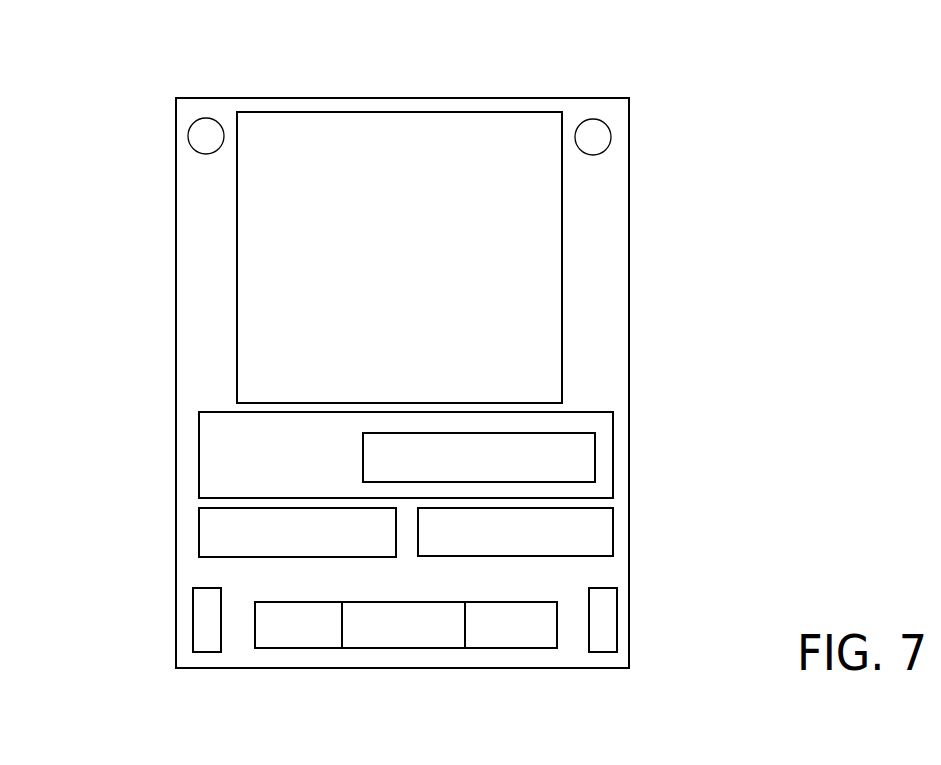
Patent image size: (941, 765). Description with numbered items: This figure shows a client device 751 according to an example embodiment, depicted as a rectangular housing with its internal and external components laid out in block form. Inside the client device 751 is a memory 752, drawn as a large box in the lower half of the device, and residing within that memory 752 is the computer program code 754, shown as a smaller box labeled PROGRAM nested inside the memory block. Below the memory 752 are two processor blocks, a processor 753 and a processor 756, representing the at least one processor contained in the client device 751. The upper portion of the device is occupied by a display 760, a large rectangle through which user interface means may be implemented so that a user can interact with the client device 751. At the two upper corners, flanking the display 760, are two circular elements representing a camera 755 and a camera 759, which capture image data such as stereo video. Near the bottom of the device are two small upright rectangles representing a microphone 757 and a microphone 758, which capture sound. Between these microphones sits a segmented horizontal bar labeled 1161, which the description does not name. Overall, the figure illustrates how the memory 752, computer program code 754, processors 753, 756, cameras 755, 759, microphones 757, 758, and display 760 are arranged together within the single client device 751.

The client device 751 is at (452, 92).
The memory 752 is at (198, 466).
The processor 753 is at (196, 533).
The computer program code 754 is at (603, 462).
The camera 755 is at (211, 124).
The processor 756 is at (618, 525).
The microphone 757 is at (612, 611).
The microphone 758 is at (206, 627).
The camera 759 is at (599, 137).
The display 760 is at (399, 257).
The button bar 1161 is at (418, 654).